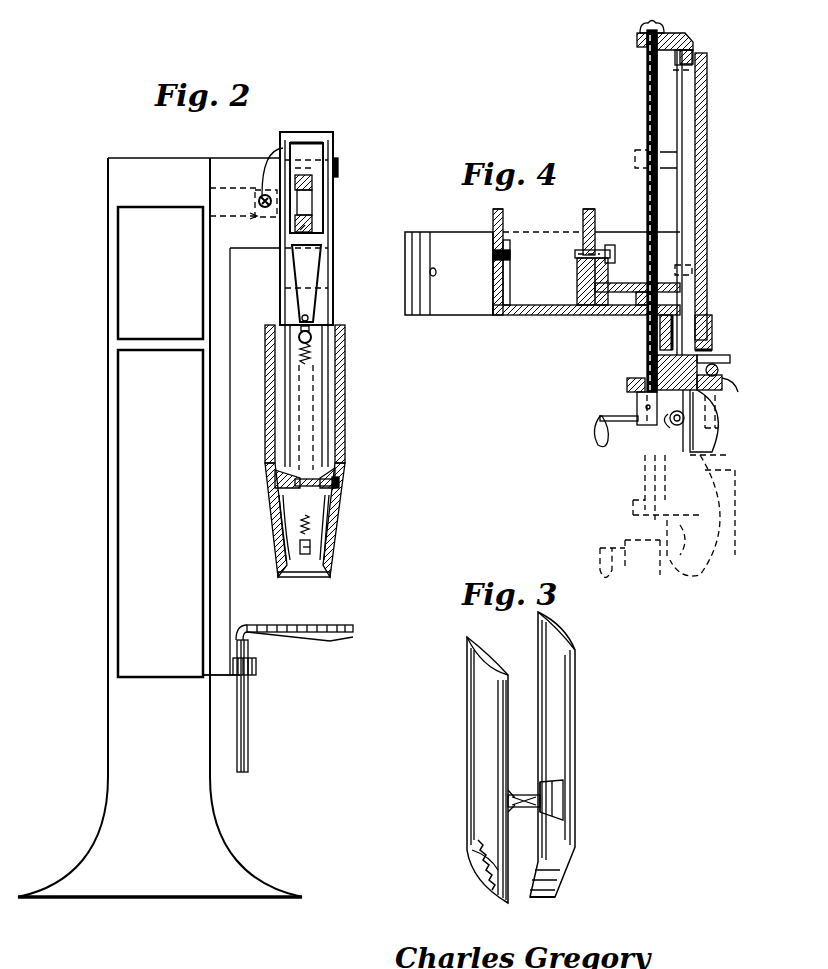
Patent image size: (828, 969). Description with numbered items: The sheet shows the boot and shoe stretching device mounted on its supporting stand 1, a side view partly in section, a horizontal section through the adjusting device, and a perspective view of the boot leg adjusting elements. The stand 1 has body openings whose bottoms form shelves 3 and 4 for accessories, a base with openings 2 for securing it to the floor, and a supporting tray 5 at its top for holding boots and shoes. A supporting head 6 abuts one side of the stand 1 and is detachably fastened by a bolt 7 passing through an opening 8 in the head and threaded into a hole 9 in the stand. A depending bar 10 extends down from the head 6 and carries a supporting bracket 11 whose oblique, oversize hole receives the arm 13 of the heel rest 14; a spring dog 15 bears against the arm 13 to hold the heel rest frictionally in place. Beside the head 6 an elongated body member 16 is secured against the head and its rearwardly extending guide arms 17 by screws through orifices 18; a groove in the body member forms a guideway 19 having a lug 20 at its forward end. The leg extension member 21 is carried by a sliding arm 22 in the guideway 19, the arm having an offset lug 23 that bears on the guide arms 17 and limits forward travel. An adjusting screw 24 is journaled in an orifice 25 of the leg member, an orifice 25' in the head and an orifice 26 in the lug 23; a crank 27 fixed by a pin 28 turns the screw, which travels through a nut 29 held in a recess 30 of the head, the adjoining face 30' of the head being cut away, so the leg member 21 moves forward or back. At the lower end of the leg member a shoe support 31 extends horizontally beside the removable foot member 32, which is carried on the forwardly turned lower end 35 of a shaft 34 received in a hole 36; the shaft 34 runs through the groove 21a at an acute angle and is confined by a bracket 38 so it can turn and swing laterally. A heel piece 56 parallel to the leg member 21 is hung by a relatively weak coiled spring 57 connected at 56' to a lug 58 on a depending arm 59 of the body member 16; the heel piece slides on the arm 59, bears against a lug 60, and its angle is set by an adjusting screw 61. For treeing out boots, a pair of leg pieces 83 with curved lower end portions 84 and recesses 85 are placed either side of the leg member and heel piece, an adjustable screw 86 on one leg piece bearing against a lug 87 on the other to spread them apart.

In FIG. 2, the supporting stand 1 is at (115, 744).
In FIG. 4, the supporting stand 1 is at (500, 315).
In FIG. 4, the openings 2 is at (436, 276).
In FIG. 2, the shelf 3 is at (128, 685).
In FIG. 2, the shelf 4 is at (128, 348).
In FIG. 4, the supporting tray 5 is at (545, 212).
In FIG. 2, the supporting head 6 is at (220, 162).
In FIG. 4, the supporting head 6 is at (612, 316).
In FIG. 4, the bolt 7 is at (575, 253).
In FIG. 4, the opening 8 is at (585, 278).
In FIG. 4, the hole 9 is at (575, 272).
In FIG. 2, the depending bar 10 is at (232, 592).
In FIG. 2, the supporting bracket 11 is at (250, 677).
In FIG. 2, the arm 13 is at (248, 718).
In FIG. 2, the heel rest 14 is at (285, 630).
In FIG. 2, the spring dog 15 is at (258, 668).
In FIG. 2, the body member 16 is at (325, 200).
In FIG. 4, the body member 16 is at (708, 98).
In FIG. 2, the guide arms 17 is at (290, 160).
In FIG. 4, the guide arms 17 is at (672, 33).
In FIG. 2, the orifices 18 is at (293, 148).
In FIG. 4, the orifices 18 is at (677, 72).
In FIG. 2, the guideway 19 is at (312, 212).
In FIG. 2, the lug 20 is at (292, 237).
In FIG. 4, the lug 20 is at (660, 347).
In FIG. 4, the leg extension member 21 is at (705, 390).
In FIG. 4, the groove 21a is at (735, 388).
In FIG. 2, the sliding arm 22 is at (312, 230).
In FIG. 4, the sliding arm 22 is at (708, 226).
In FIG. 4, the offset lug 23 is at (637, 40).
In FIG. 2, the adjusting screw 24 is at (268, 160).
In FIG. 4, the adjusting screw 24 is at (647, 122).
In FIG. 4, the orifice 25 is at (621, 392).
In FIG. 2, the orifice 25' is at (213, 191).
In FIG. 4, the orifice 25' is at (630, 318).
In FIG. 4, the orifice 26 is at (645, 50).
In FIG. 4, the crank 27 is at (600, 440).
In FIG. 4, the pin 28 is at (640, 428).
In FIG. 2, the nut 29 is at (255, 195).
In FIG. 4, the nut 29 is at (625, 313).
In FIG. 4, the recess 30 is at (612, 319).
In FIG. 2, the strip edge 30' is at (243, 237).
In FIG. 4, the shoe support 31 is at (670, 440).
In FIG. 4, the foot member 32 is at (718, 445).
In FIG. 4, the shaft 34 is at (720, 372).
In FIG. 4, the forwardly turned lower end 35 is at (730, 414).
In FIG. 4, the hole 36 is at (720, 428).
In FIG. 4, the bracket 38 is at (720, 358).
In FIG. 2, the heel piece 56 is at (339, 527).
In FIG. 4, the heel piece 56 is at (722, 322).
In FIG. 2, the spring connection 56' is at (314, 578).
In FIG. 2, the coiled spring 57 is at (312, 355).
In FIG. 2, the lug 58 is at (312, 331).
In FIG. 2, the depending arm 59 is at (318, 275).
In FIG. 2, the lug 60 is at (340, 168).
In FIG. 2, the adjusting screw 61 is at (300, 316).
In FIG. 2, the leg pieces 83 is at (265, 448).
In FIG. 3, the leg pieces 83 is at (470, 762).
In FIG. 2, the curved lower end portions 84 is at (278, 568).
In FIG. 3, the curved lower end portions 84 is at (560, 898).
In FIG. 3, the recesses 85 is at (480, 862).
In FIG. 2, the adjustable screw 86 is at (290, 475).
In FIG. 3, the adjustable screw 86 is at (532, 798).
In FIG. 2, the lug 87 is at (285, 498).
In FIG. 3, the lug 87 is at (512, 812).